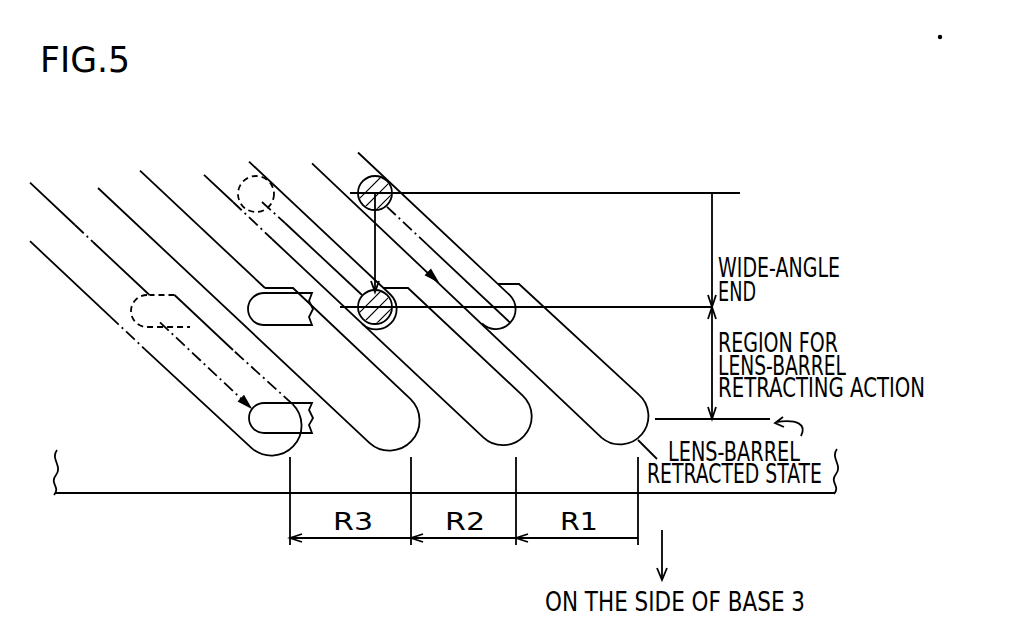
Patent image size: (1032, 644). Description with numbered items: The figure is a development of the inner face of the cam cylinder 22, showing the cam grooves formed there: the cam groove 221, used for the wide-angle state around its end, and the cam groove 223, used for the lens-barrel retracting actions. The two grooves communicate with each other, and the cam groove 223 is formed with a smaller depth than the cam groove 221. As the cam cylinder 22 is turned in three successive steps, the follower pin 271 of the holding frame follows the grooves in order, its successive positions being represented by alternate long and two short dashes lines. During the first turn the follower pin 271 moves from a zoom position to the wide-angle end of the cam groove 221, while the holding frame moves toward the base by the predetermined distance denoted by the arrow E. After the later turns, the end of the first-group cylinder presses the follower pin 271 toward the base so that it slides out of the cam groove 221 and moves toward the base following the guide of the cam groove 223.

The cam cylinder 22 is at (151, 495).
The cam groove 221 is at (256, 176).
The cam groove 223 is at (598, 358).
The follower pin 271 is at (364, 180).
The predetermined distance E is at (380, 258).